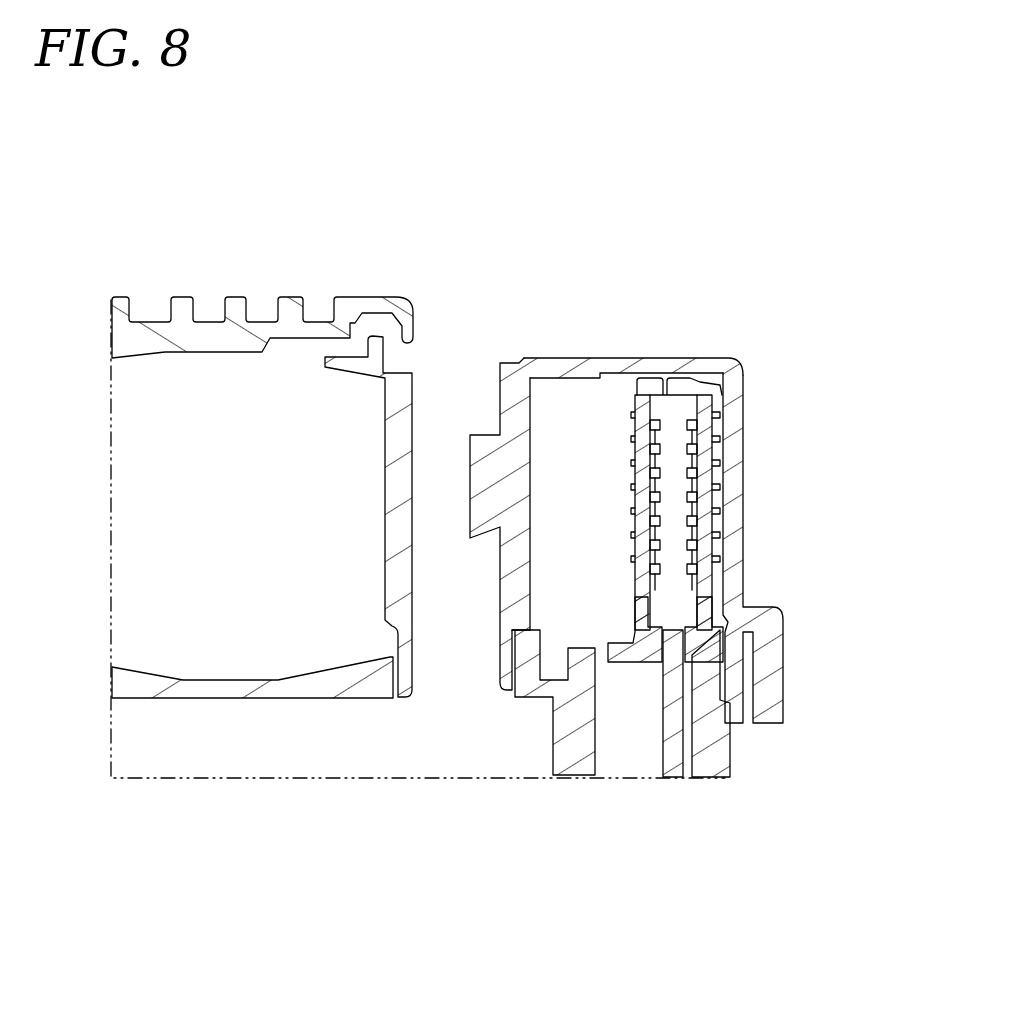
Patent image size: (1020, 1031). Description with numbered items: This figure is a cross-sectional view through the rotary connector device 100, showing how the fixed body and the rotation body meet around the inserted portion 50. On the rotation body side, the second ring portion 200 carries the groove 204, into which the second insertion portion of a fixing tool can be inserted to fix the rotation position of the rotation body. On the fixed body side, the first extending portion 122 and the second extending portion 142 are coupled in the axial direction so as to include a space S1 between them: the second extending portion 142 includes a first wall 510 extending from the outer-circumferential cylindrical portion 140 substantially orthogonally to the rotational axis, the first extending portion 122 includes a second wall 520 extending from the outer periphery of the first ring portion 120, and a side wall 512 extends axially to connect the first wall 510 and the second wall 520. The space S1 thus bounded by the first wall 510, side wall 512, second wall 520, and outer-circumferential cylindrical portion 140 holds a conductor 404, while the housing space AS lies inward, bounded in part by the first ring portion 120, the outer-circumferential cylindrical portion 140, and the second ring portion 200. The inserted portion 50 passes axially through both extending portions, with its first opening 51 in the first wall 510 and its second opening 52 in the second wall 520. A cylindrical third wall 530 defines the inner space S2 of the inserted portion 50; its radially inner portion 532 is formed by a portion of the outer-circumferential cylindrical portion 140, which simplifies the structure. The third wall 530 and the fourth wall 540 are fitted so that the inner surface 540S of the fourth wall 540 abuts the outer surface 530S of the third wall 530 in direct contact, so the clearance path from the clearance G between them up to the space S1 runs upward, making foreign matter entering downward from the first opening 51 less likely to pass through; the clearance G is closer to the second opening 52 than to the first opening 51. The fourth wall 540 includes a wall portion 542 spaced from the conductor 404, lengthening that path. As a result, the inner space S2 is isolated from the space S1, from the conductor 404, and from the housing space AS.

The rotary connector device 100 is at (798, 166).
The inserted portion 50 is at (533, 168).
The first opening 51 is at (470, 358).
The second opening 52 is at (436, 701).
The first ring portion 120 is at (290, 692).
The first extending portion 122 is at (544, 862).
The outer-circumferential cylindrical portion 140 is at (396, 600).
The second extending portion 142 is at (676, 539).
The second ring portion 200 is at (183, 299).
The groove 204 is at (322, 300).
The conductor 404 is at (653, 578).
The first wall 510 is at (570, 368).
The side wall 512 is at (737, 452).
The second wall 520 is at (545, 690).
The third wall 530 is at (500, 570).
The outer surface of the third wall 530S is at (513, 647).
The radially inner portion 532 is at (402, 400).
The fourth wall 540 is at (582, 953).
The inner surface of the fourth wall 540S is at (497, 680).
The wall portion 542 is at (527, 663).
The housing space AS is at (161, 434).
The space S1 is at (612, 443).
The inner space S2 is at (426, 533).
The clearance G is at (520, 711).